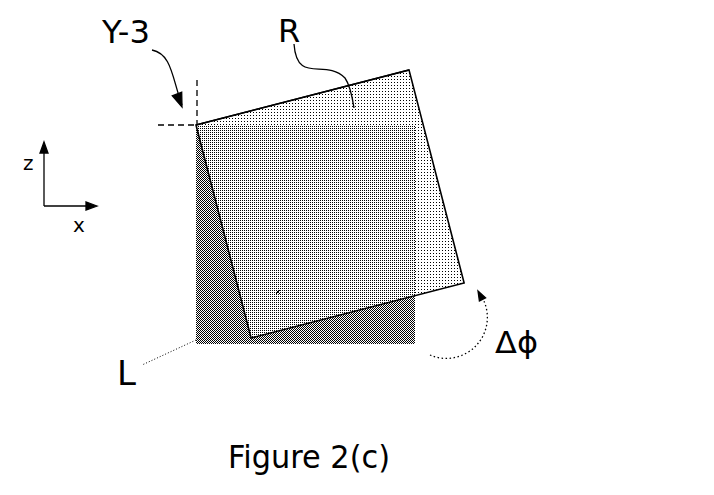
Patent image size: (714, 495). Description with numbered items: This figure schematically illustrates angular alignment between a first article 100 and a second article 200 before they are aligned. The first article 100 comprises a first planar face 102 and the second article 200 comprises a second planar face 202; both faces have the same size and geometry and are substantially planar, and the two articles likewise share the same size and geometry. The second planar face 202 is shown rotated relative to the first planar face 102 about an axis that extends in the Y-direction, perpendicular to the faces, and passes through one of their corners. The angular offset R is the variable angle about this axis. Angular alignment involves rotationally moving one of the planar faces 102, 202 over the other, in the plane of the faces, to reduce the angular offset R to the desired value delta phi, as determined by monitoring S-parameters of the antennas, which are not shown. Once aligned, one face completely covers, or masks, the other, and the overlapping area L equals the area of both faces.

The first article 100 is at (213, 282).
The first planar face 102 is at (392, 331).
The second article 200 is at (437, 233).
The second planar face 202 is at (385, 63).